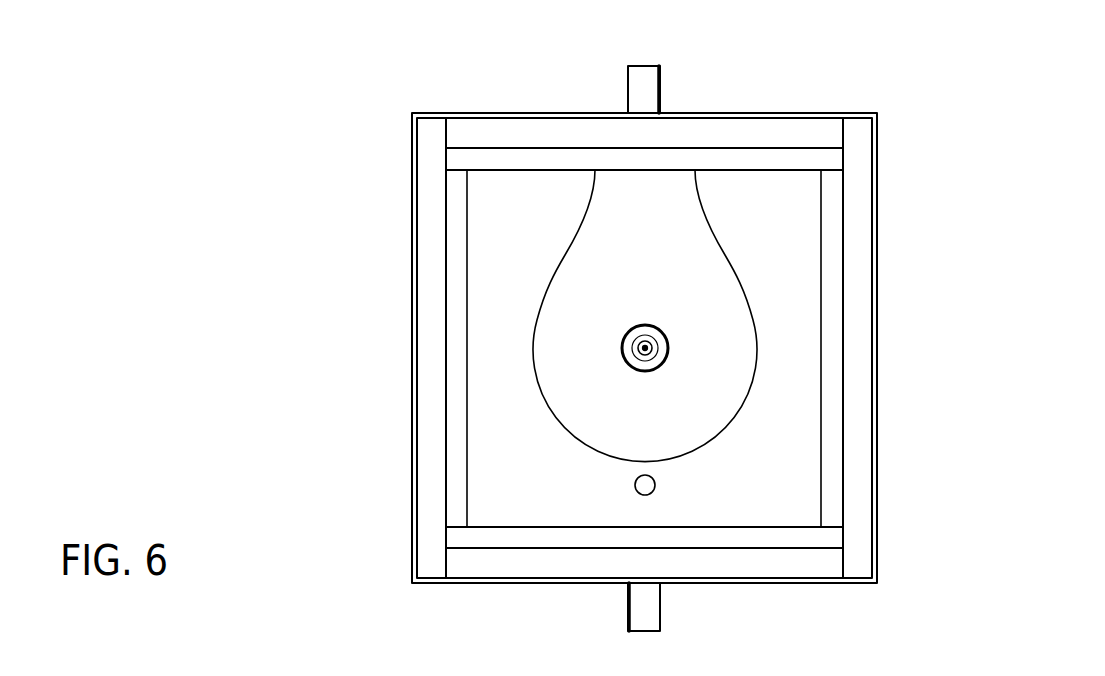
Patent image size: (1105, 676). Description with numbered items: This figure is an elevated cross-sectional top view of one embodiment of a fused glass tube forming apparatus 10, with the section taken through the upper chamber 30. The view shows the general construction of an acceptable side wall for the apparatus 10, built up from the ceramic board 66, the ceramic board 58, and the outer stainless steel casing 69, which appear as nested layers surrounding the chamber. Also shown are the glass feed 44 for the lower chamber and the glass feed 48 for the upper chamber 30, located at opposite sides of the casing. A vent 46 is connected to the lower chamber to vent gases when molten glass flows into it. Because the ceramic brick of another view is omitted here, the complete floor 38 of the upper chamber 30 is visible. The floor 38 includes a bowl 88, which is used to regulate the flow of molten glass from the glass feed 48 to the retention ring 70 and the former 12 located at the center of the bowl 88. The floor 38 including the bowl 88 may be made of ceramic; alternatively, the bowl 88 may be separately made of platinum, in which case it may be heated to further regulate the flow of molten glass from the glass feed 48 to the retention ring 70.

The apparatus 10 is at (955, 113).
The former 12 is at (622, 348).
The upper chamber 30 is at (478, 207).
The floor 38 is at (510, 489).
The glass feed 44 is at (653, 607).
The vent 46 is at (634, 486).
The glass feed 48 is at (655, 83).
The ceramic board 58 is at (858, 367).
The ceramic board 66 is at (835, 262).
The stainless steel casing 69 is at (880, 450).
The retention ring 70 is at (622, 335).
The bowl 88 is at (577, 407).